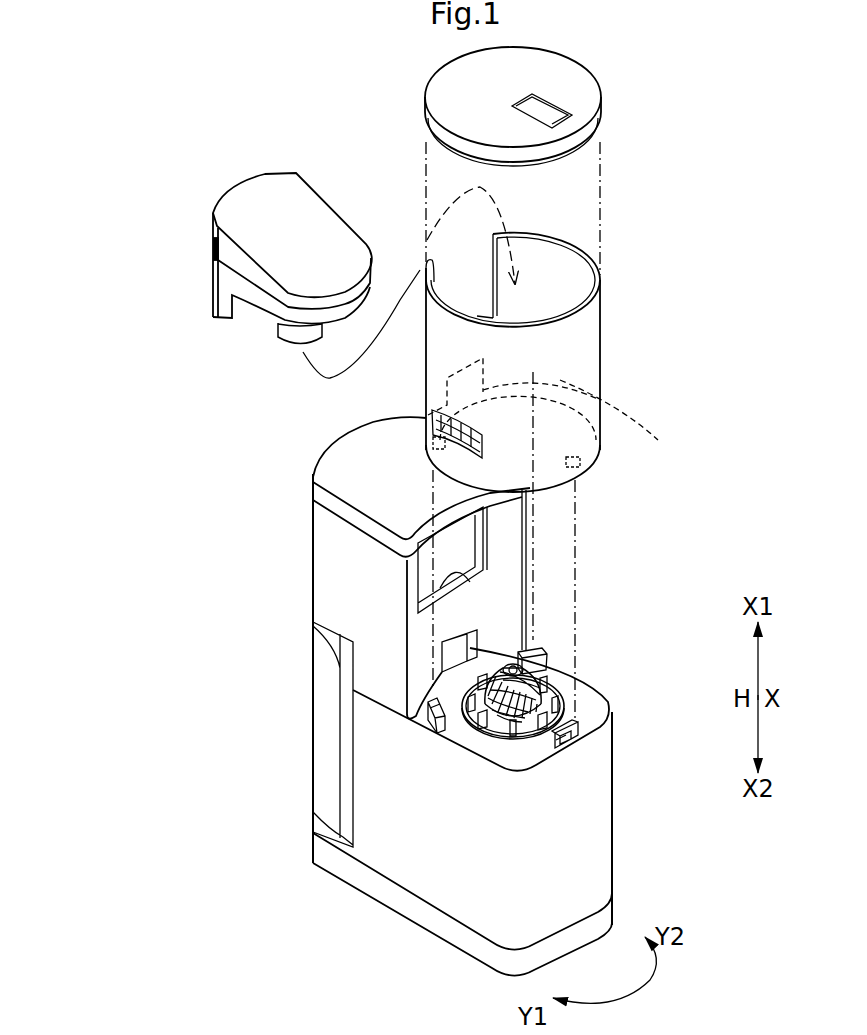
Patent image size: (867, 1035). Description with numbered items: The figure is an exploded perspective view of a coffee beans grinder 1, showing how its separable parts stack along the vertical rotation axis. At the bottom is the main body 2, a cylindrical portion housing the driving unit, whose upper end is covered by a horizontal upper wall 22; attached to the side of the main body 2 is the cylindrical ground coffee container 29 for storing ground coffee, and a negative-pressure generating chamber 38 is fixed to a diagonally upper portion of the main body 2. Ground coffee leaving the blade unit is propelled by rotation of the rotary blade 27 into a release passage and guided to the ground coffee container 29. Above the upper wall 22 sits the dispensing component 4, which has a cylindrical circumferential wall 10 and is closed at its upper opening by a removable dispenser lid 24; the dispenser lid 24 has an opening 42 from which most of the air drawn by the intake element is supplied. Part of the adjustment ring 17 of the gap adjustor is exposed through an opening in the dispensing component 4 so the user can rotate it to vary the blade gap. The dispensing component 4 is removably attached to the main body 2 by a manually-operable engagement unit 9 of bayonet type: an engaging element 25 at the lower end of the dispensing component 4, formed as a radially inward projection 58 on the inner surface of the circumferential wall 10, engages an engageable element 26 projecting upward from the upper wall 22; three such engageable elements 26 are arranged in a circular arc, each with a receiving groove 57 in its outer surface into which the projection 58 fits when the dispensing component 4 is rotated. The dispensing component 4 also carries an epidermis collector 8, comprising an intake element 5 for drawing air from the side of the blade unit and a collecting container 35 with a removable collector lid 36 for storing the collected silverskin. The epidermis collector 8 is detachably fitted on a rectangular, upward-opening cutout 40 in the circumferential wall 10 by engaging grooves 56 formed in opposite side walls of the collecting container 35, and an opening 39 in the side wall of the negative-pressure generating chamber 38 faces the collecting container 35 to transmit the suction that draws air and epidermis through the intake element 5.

The coffee beans grinder 1 is at (163, 146).
The main body 2 is at (593, 847).
The dispensing component 4 is at (594, 346).
The intake element 5 is at (284, 346).
The epidermis collector 8 is at (277, 190).
The manually-operable engagement unit 9 is at (500, 593).
The circumferential wall 10 is at (590, 366).
The adjustment ring 17 is at (426, 436).
The upper wall 22 is at (598, 700).
The dispenser lid 24 is at (448, 87).
The engaging element 25 is at (425, 450).
The engageable element 26 is at (540, 650).
The rotary blade 27 is at (500, 727).
The ground coffee container 29 is at (330, 725).
The collecting container 35 is at (323, 220).
The collector lid 36 is at (304, 202).
The negative-pressure generating chamber 38 is at (330, 557).
The opening 39 is at (458, 570).
The cutout 40 is at (490, 283).
The opening 42 is at (560, 120).
The engaging grooves 56 is at (212, 276).
The receiving groove 57 is at (430, 724).
The projection 58 is at (500, 414).